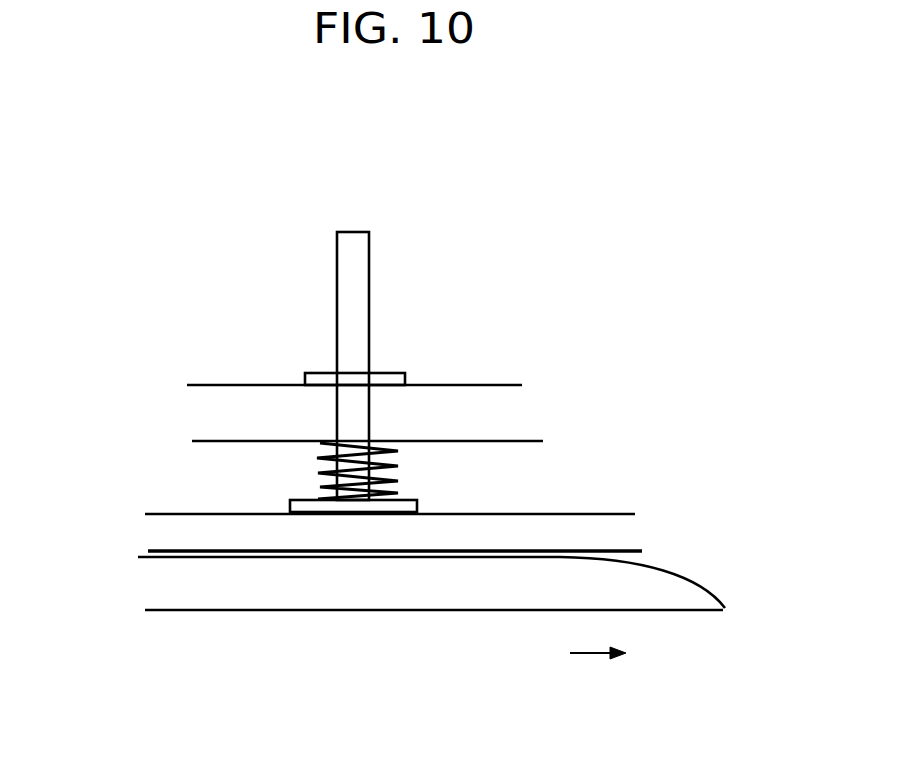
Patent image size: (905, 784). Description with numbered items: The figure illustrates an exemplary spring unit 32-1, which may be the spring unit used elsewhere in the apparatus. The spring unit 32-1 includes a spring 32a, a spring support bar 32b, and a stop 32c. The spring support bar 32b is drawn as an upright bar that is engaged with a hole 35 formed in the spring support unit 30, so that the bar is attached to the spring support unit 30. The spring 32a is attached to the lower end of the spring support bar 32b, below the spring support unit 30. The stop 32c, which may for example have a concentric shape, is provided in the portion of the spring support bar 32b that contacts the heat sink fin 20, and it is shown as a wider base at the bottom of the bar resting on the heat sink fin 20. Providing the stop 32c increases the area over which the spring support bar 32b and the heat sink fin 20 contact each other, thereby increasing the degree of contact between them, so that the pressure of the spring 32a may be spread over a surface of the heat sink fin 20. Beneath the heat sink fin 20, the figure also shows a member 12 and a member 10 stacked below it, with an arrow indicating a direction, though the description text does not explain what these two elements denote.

The spring unit 32-1 is at (367, 186).
The spring support bar 32b is at (337, 283).
The hole 35 is at (370, 413).
The spring 32a is at (392, 464).
The stop 32c is at (292, 500).
The spring support unit 30 is at (500, 385).
The heat sink fin 20 is at (635, 514).
The sheet 12 is at (700, 583).
The stage 10 is at (440, 611).